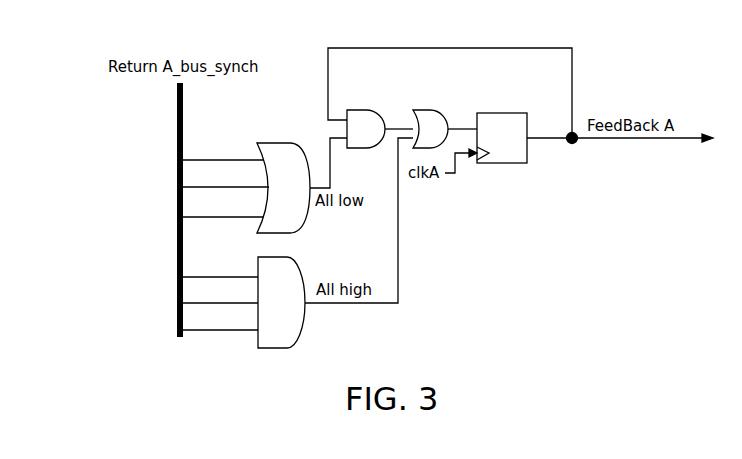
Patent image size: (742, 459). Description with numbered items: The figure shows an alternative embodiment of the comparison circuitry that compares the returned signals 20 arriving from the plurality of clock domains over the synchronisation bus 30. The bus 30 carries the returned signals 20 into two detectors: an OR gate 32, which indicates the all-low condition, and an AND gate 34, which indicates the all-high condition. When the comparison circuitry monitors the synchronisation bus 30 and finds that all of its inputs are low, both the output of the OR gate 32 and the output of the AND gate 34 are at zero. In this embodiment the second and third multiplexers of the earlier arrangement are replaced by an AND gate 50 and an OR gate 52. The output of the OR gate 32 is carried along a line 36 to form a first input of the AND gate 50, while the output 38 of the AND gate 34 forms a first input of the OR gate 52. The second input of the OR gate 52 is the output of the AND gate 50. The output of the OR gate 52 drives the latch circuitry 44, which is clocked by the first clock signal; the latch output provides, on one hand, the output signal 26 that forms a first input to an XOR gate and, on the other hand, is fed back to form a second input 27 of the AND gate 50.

The returned signals 20 is at (226, 234).
The output signal 26 is at (694, 135).
The second input 27 is at (517, 48).
The synchronisation bus 30 is at (177, 122).
The OR gate 32 is at (277, 142).
The AND gate 34 is at (285, 350).
The all low signal line 36 is at (333, 173).
The output 38 is at (400, 283).
The latch circuitry 44 is at (505, 165).
The AND gate 50 is at (358, 108).
The OR gate 52 is at (423, 108).